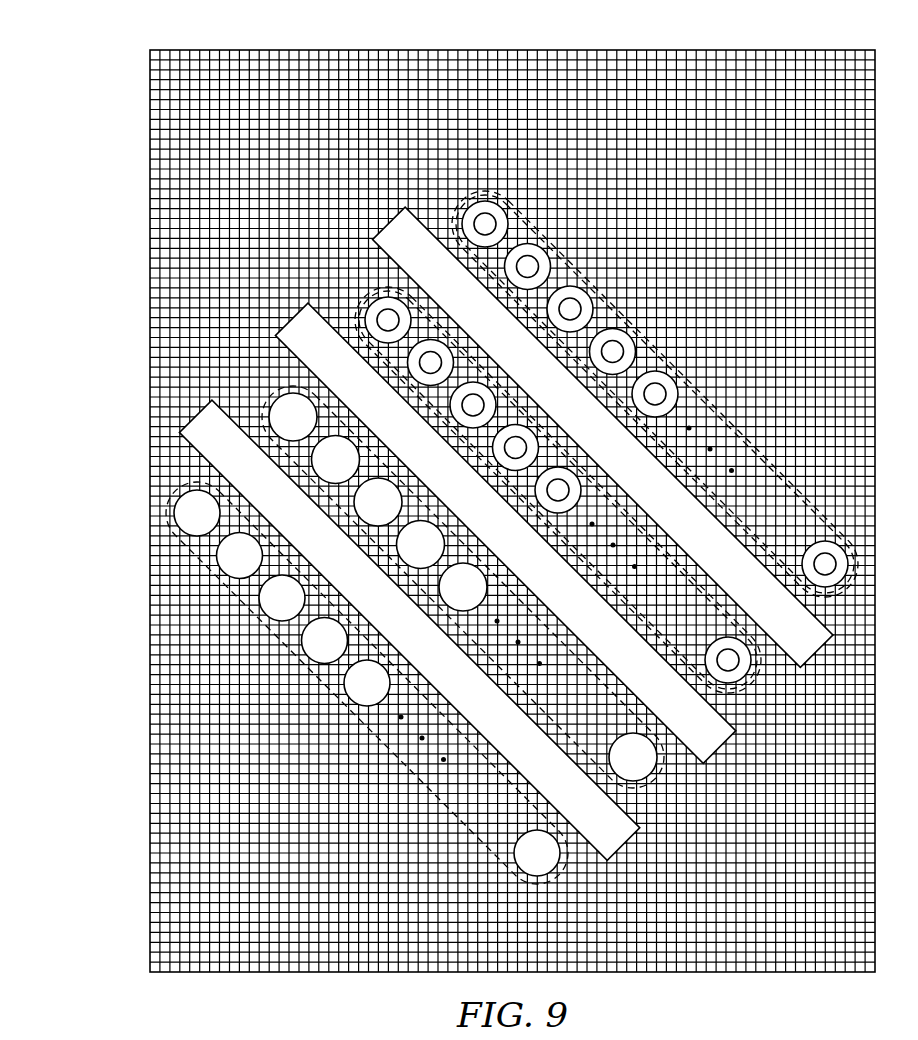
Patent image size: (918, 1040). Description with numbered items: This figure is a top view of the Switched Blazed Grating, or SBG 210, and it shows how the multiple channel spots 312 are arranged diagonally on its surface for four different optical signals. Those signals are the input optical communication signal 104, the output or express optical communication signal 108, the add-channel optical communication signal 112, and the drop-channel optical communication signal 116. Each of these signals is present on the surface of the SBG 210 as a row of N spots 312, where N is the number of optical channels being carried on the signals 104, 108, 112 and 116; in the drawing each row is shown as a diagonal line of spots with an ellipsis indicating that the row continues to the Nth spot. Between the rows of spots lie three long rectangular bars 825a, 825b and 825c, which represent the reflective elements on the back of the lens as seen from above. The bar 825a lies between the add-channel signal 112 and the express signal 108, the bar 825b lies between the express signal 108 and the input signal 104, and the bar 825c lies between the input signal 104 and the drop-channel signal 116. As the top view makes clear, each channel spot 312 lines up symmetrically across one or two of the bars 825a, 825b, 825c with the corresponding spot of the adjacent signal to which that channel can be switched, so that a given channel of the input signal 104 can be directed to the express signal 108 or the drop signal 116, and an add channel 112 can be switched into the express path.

The SBG 210 is at (757, 50).
The add-channel optical communication signal 112 is at (466, 198).
The output optical communication signal 108 is at (360, 300).
The input optical communication signal 104 is at (270, 393).
The drop-channel optical communication signal 116 is at (177, 488).
The channel spots 312 is at (191, 521).
The rectangular bar 825a is at (812, 645).
The rectangular bar 825b is at (717, 742).
The rectangular bar 825c is at (620, 838).